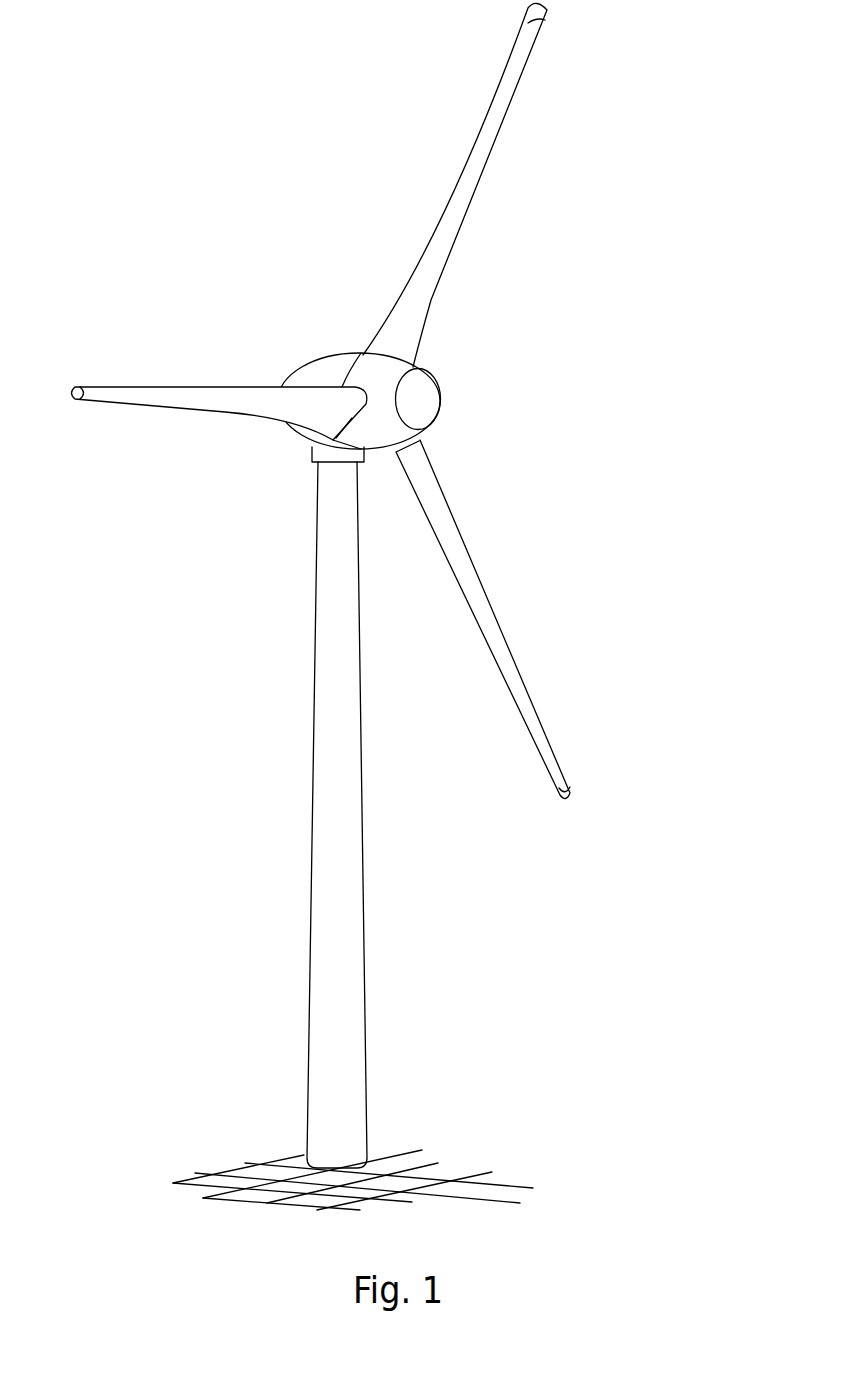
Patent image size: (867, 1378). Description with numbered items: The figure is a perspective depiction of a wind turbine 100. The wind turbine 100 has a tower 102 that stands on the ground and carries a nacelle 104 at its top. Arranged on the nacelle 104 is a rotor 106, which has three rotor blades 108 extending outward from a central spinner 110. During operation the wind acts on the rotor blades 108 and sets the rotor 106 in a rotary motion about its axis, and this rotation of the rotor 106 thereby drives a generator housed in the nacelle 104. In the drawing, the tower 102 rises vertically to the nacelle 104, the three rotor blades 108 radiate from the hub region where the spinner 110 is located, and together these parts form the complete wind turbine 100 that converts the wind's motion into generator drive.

The wind turbine 100 is at (372, 606).
The tower 102 is at (345, 923).
The nacelle 104 is at (330, 375).
The rotor 106 is at (372, 400).
The rotor blades 108 is at (487, 142).
The spinner 110 is at (422, 402).